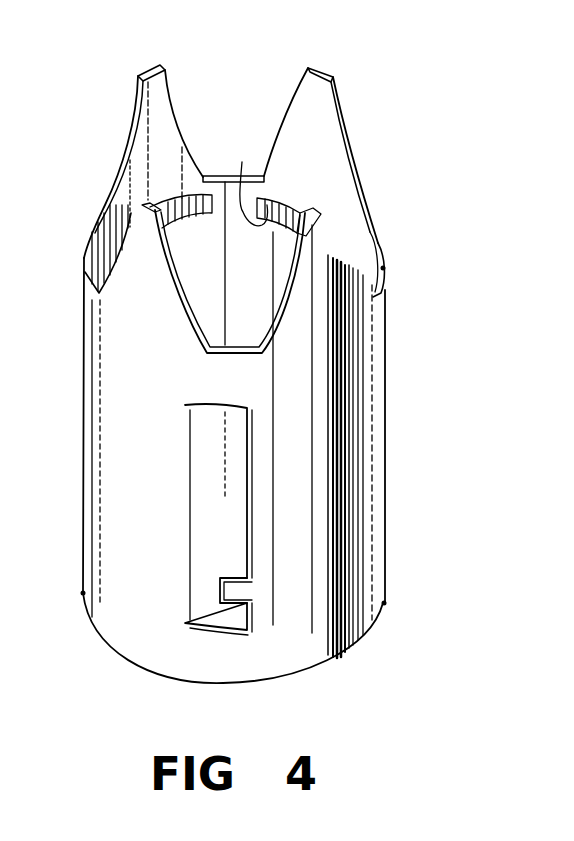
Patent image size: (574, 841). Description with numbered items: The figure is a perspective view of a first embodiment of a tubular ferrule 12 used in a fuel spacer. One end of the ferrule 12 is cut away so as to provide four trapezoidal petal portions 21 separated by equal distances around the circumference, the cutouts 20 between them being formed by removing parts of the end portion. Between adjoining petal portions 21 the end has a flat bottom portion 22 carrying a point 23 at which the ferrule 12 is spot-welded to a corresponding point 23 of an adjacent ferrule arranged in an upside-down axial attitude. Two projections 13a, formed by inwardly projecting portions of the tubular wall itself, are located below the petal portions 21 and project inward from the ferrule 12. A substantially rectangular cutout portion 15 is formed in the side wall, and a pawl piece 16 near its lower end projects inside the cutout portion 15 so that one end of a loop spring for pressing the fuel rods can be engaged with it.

The tubular ferrule 12 is at (386, 447).
The projection 13a is at (237, 177).
The cutout portion 15 is at (208, 520).
The pawl piece 16 is at (231, 593).
The cutout 20 is at (265, 100).
The trapezoidal petal portion 21 is at (163, 122).
The flat bottom portion 22 is at (383, 247).
The point 23 is at (383, 268).